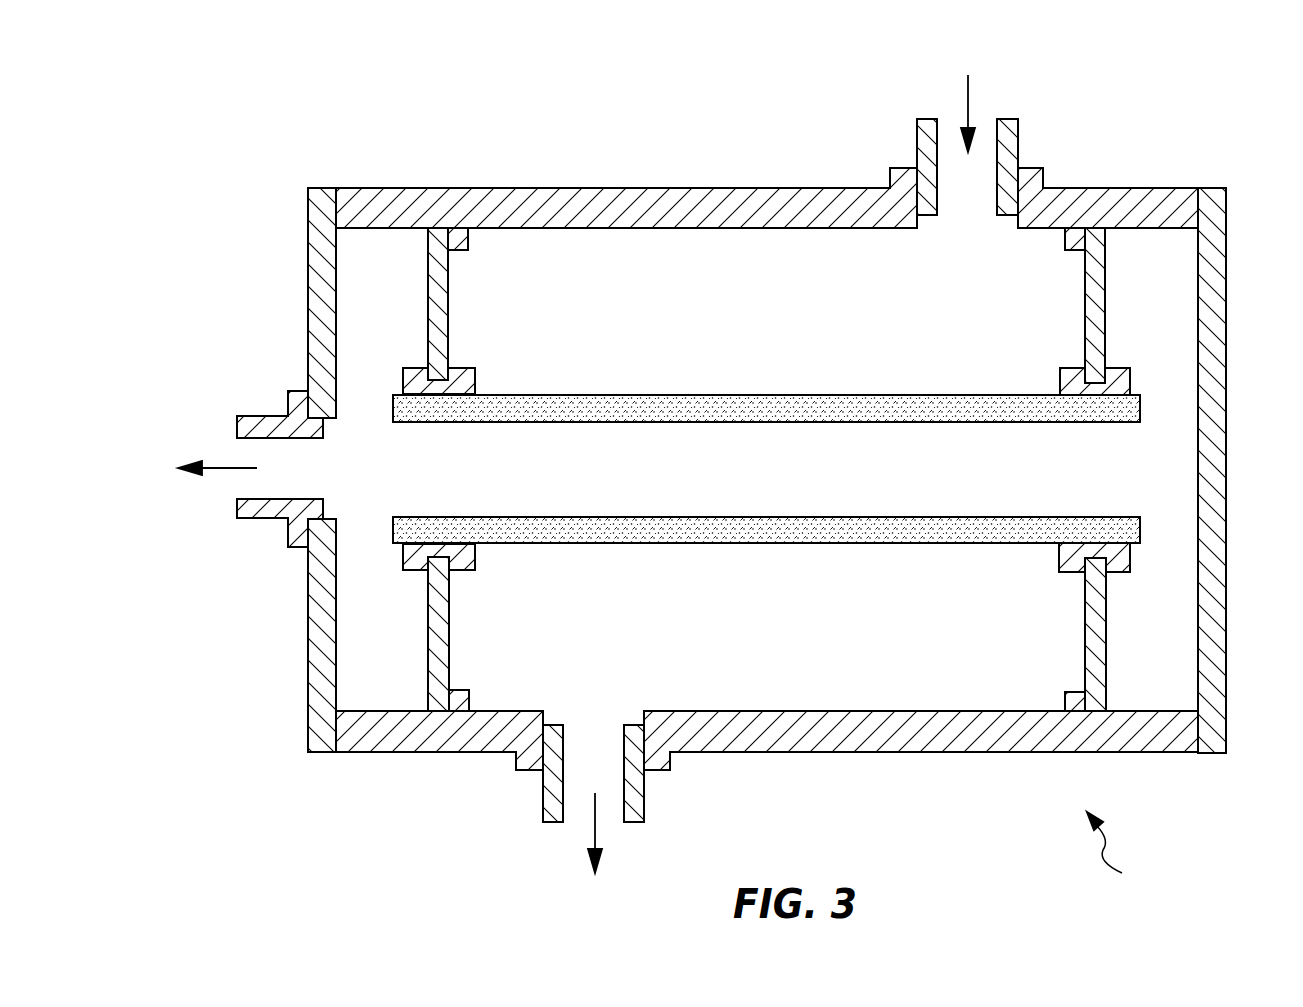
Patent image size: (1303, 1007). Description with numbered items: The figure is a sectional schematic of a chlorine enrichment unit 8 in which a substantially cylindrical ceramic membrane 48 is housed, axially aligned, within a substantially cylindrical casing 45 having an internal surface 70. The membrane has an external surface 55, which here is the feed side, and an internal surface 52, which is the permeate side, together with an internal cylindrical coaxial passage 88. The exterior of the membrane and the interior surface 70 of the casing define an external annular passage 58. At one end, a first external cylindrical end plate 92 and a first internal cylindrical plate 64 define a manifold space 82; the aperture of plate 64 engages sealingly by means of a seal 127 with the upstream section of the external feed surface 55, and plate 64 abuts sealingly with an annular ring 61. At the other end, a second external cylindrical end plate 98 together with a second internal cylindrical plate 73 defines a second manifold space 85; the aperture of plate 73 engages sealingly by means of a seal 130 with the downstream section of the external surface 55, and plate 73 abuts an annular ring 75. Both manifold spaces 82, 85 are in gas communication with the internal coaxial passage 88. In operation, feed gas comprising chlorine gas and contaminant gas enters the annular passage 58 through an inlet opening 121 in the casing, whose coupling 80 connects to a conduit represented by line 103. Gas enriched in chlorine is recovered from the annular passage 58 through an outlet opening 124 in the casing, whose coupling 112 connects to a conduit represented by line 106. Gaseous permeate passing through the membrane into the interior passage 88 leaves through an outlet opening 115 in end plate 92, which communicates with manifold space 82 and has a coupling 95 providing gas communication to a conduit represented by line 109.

The chlorine enrichment unit 8 is at (731, 511).
The cylindrical casing 45 is at (757, 190).
The cylindrical ceramic membrane 48 is at (890, 398).
The internal surface 52 is at (598, 424).
The external surface 55 is at (715, 396).
The external annular passage 58 is at (761, 320).
The annular ring 61 is at (470, 240).
The first internal cylindrical plate 64 is at (450, 325).
The internal surface 70 is at (678, 232).
The second internal cylindrical plate 73 is at (1088, 330).
The annular ring 75 is at (1068, 243).
The coupling 80 is at (922, 140).
The manifold space 82 is at (396, 637).
The second manifold space 85 is at (1165, 640).
The internal cylindrical coaxial passage 88 is at (973, 490).
The first external cylindrical end plate 92 is at (320, 260).
The coupling 95 is at (263, 415).
The second external cylindrical end plate 98 is at (1228, 458).
The line 103 is at (975, 92).
The line 106 is at (600, 840).
The line 109 is at (217, 470).
The coupling 112 is at (545, 804).
The outlet opening 115 is at (337, 462).
The inlet opening 121 is at (965, 229).
The outlet opening 124 is at (590, 718).
The seal 127 is at (478, 387).
The seal 130 is at (1132, 385).